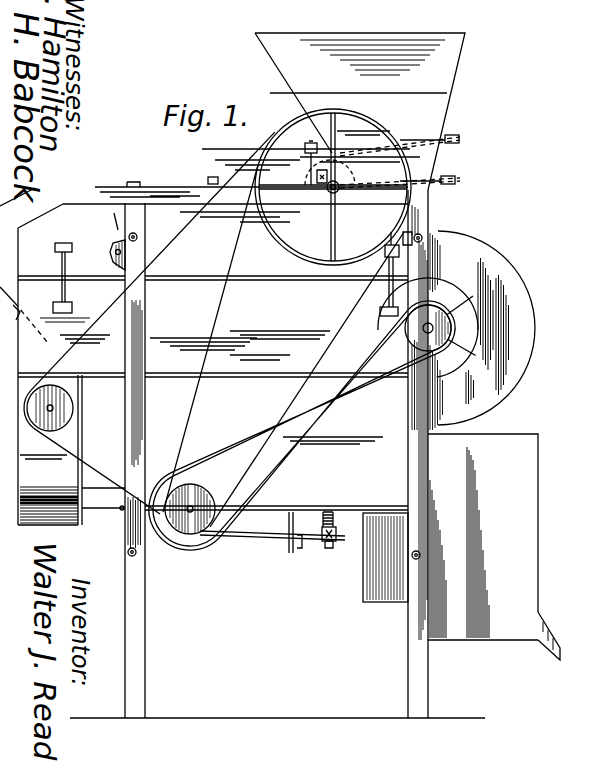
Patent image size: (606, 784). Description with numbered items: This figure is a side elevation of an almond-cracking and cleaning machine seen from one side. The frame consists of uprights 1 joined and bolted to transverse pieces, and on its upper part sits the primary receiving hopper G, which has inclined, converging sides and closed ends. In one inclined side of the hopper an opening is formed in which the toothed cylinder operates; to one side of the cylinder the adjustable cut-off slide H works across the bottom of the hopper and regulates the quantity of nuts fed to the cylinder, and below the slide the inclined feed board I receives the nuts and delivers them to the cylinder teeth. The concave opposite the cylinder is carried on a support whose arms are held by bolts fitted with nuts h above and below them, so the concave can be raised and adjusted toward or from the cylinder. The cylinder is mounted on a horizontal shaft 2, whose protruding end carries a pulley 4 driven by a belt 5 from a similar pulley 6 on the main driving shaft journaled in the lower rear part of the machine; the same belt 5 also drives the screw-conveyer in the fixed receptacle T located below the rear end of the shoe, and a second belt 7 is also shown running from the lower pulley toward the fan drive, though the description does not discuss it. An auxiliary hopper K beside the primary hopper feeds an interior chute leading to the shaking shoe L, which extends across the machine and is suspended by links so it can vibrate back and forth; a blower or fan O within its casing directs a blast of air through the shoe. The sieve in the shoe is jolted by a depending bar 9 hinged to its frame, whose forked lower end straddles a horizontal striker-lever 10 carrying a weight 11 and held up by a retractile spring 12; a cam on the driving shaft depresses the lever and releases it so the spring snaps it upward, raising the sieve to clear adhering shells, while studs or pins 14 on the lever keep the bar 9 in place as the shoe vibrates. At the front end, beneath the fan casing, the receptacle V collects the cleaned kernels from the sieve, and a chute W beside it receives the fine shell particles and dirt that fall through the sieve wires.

The uprights 1 is at (147, 689).
The horizontal shaft 2 is at (330, 193).
The pulley 4 is at (290, 249).
The belt 5 is at (112, 247).
The pulley 6 is at (190, 509).
The belt 7 is at (208, 495).
The depending bar 9 is at (207, 177).
The striker-lever 10 is at (270, 538).
The weight 11 is at (323, 540).
The retractile spring 12 is at (335, 519).
The studs or pins 14 is at (300, 549).
The primary receiving hopper G is at (360, 111).
The adjustable cut-off slide H is at (461, 139).
The inclined feed board I is at (456, 182).
The auxiliary hopper K is at (400, 172).
The shaking shoe L is at (72, 262).
The blower or fan O is at (451, 341).
The fixed receptacle T is at (47, 474).
The receptacle V is at (494, 547).
The chute W is at (385, 557).
The nuts h is at (330, 155).